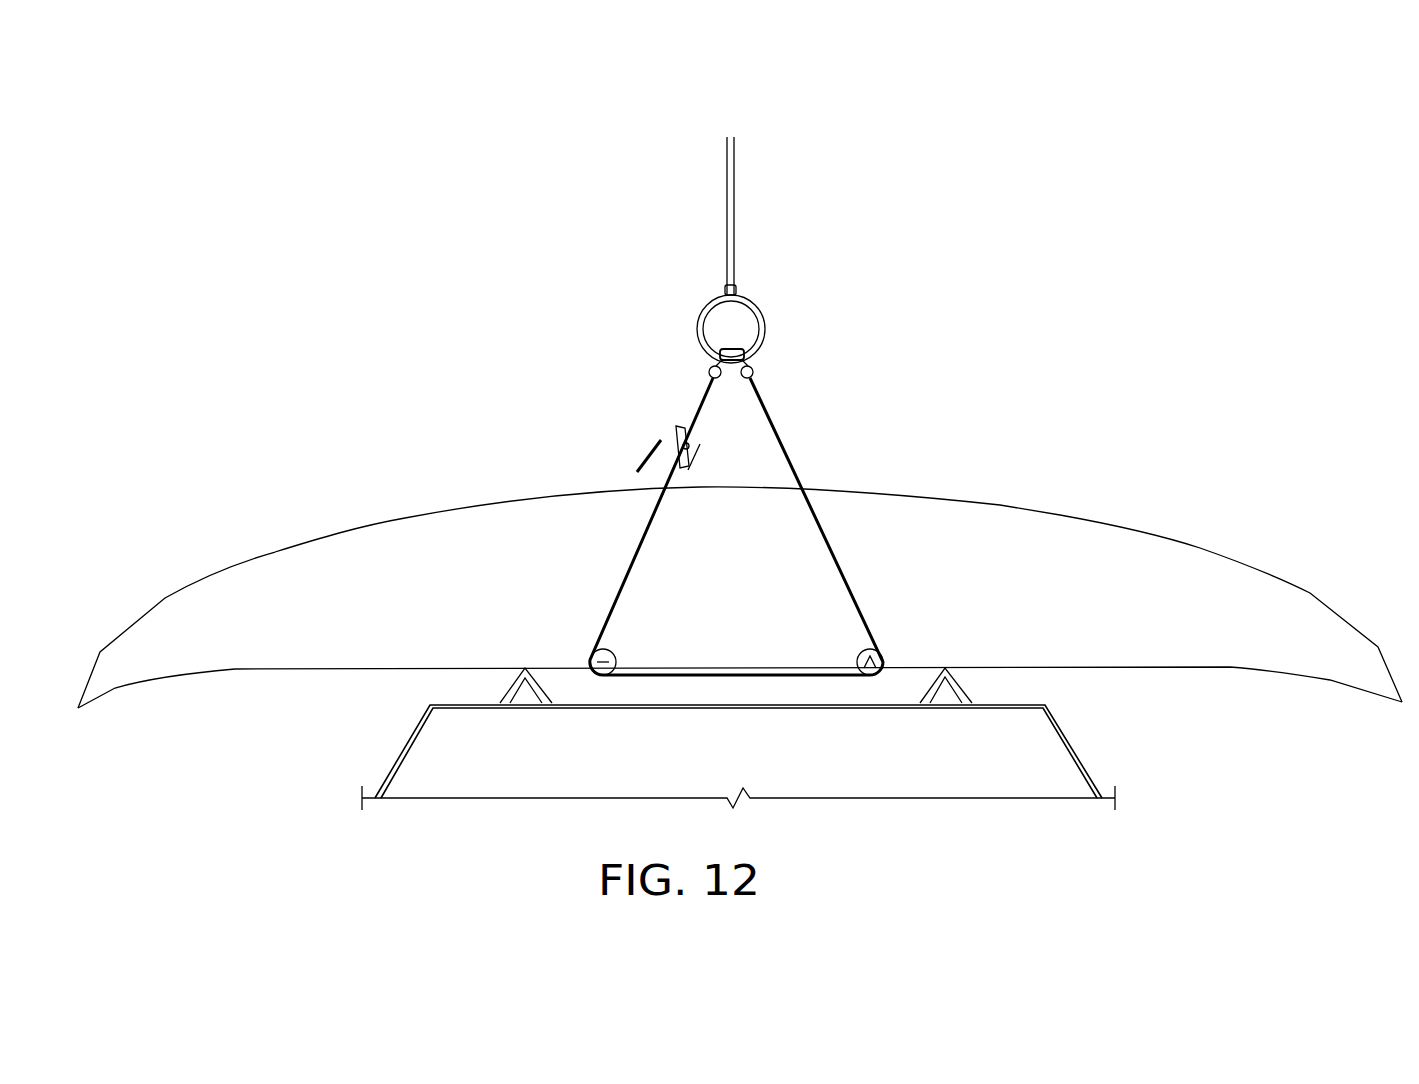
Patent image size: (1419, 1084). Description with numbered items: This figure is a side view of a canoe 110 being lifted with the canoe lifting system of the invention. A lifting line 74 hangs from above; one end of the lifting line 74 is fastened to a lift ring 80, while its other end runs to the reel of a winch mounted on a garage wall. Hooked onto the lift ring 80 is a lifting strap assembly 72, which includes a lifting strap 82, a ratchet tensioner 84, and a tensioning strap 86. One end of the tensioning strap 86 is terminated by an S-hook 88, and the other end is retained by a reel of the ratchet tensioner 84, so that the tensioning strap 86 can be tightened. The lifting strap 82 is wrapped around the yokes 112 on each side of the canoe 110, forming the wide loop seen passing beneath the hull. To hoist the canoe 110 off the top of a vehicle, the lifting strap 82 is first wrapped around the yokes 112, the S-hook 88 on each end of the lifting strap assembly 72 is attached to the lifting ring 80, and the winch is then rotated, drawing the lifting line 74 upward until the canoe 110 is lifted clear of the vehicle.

The lifting strap assembly 72 is at (773, 509).
The lifting line 74 is at (735, 227).
The lift ring 80 is at (756, 302).
The lifting strap 82 is at (780, 435).
The ratchet tensioner 84 is at (675, 428).
The tensioning strap 86 is at (698, 403).
The S-hook 88 is at (754, 367).
The canoe 110 is at (1105, 521).
The yokes 112 is at (872, 668).